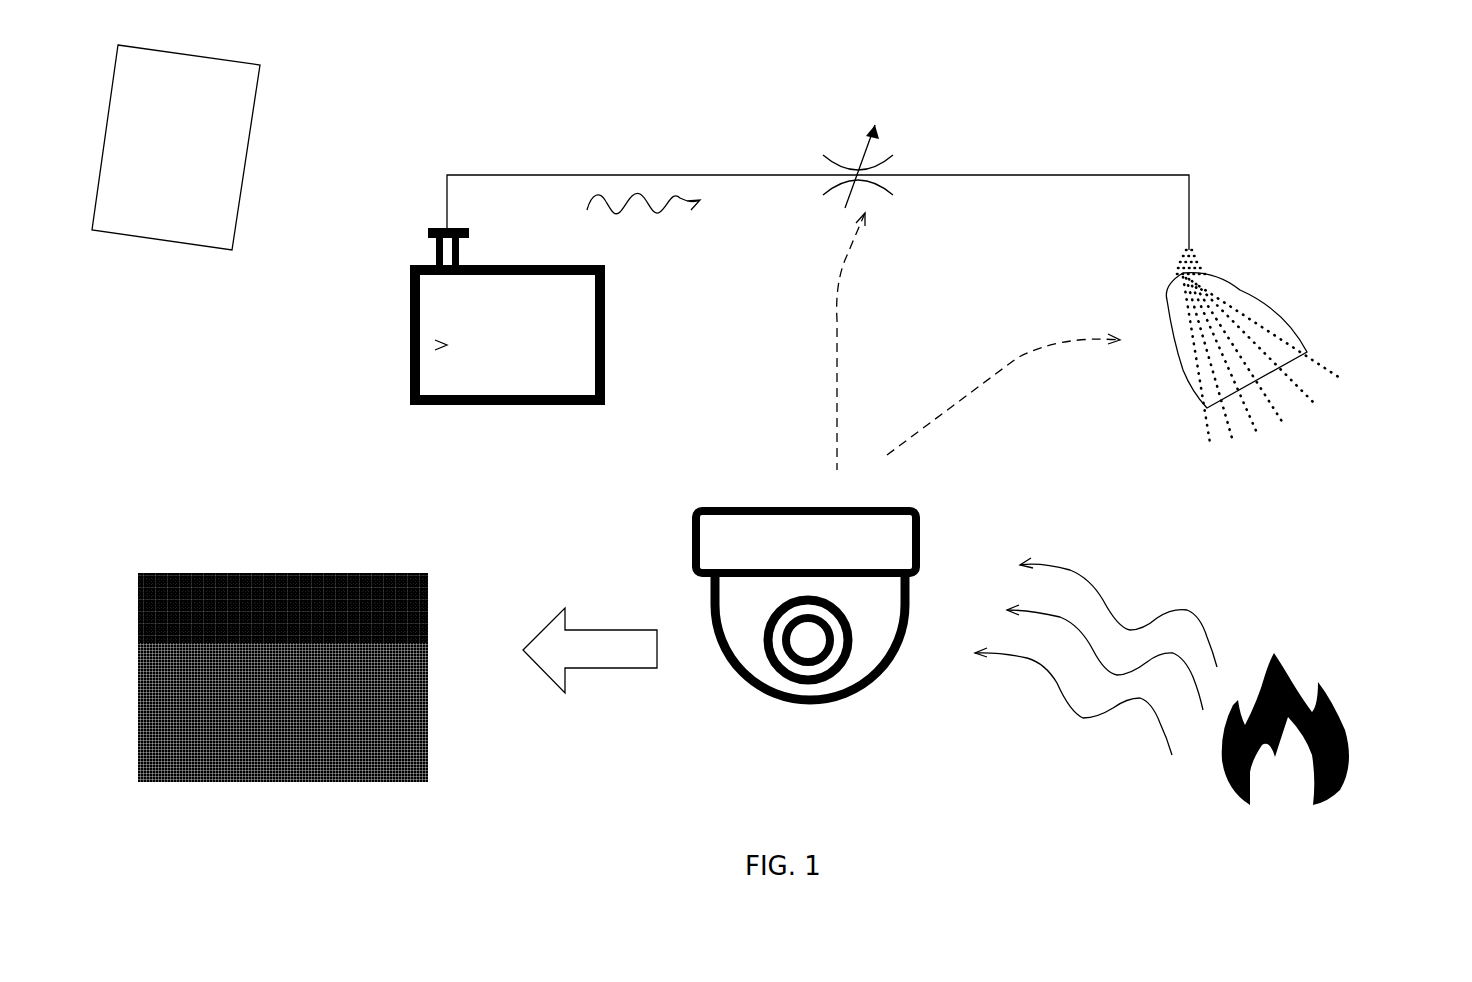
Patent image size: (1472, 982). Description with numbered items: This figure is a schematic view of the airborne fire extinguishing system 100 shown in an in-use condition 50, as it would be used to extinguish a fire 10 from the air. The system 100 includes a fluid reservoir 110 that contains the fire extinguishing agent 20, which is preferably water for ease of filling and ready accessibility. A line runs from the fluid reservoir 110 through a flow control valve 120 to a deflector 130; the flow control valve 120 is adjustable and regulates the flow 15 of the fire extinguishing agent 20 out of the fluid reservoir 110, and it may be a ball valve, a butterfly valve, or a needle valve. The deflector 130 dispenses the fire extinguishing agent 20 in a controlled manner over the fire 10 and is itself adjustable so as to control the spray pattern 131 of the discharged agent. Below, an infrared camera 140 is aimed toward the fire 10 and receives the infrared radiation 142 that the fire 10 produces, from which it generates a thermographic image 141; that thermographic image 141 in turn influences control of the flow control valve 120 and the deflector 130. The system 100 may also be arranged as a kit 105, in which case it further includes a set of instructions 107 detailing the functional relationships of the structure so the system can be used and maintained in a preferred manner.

The fire 10 is at (1363, 802).
The flow 15 is at (646, 215).
The fire extinguishing agent 20 is at (447, 345).
The in-use condition 50 is at (1319, 131).
The airborne fire extinguishing system 100 is at (1317, 53).
The kit 105 is at (1317, 91).
The set of instructions 107 is at (281, 84).
The fluid reservoir 110 is at (394, 247).
The flow control valve 120 is at (898, 126).
The deflector 130 is at (1271, 297).
The spray pattern 131 is at (1334, 417).
The infrared camera 140 is at (830, 708).
The thermographic image 141 is at (480, 791).
The infrared radiation 142 is at (1199, 573).